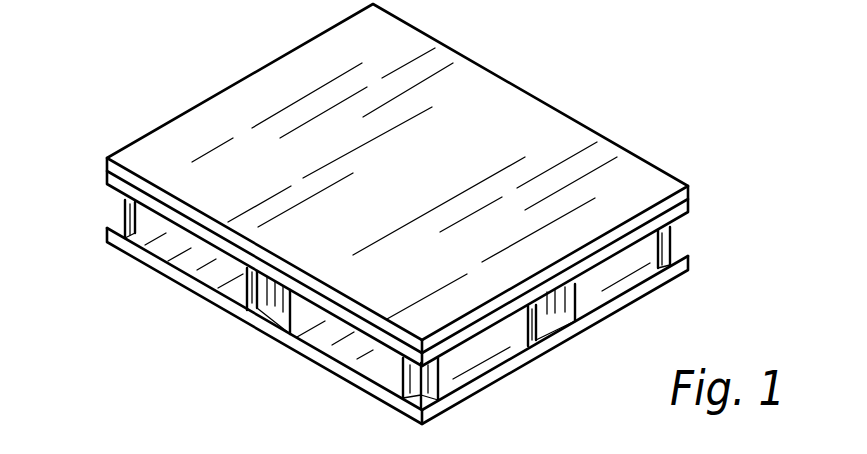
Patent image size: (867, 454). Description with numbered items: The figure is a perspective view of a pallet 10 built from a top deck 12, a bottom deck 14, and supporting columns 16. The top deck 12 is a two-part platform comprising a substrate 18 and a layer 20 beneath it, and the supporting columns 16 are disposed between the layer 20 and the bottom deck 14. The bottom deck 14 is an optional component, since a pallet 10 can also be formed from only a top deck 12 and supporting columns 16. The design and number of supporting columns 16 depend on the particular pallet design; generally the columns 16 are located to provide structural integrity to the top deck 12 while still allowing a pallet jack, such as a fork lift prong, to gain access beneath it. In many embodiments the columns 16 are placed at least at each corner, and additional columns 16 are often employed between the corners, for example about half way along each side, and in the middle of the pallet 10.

The pallet 10 is at (614, 86).
The top deck 12 is at (290, 73).
The bottom deck 14 is at (190, 284).
The supporting columns 16 is at (408, 367).
The substrate 18 is at (115, 170).
The layer 20 is at (118, 190).